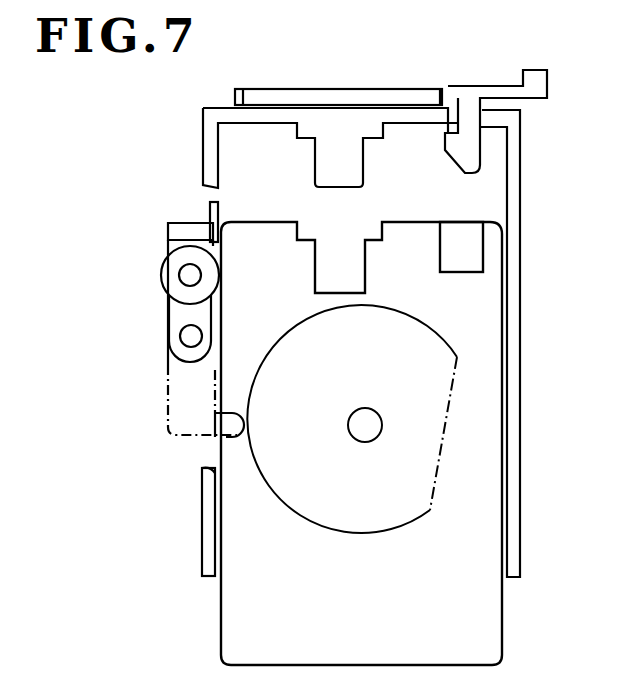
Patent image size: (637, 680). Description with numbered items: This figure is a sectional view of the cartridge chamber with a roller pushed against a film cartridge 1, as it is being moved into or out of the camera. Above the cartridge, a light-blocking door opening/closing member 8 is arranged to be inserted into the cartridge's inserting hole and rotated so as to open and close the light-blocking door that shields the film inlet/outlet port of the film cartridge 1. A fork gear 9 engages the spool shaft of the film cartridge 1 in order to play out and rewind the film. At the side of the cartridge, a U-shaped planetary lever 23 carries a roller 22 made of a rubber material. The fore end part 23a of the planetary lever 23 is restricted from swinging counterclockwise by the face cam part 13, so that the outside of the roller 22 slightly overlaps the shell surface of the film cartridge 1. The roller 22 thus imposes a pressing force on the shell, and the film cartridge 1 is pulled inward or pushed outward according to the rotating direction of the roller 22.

The film cartridge 1 is at (501, 618).
The light-blocking door opening/closing member 8 is at (470, 127).
The fork gear 9 is at (339, 108).
The face cam part 13 is at (292, 512).
The roller 22 is at (172, 272).
The planetary lever 23 is at (175, 313).
The fore end part 23a is at (237, 438).